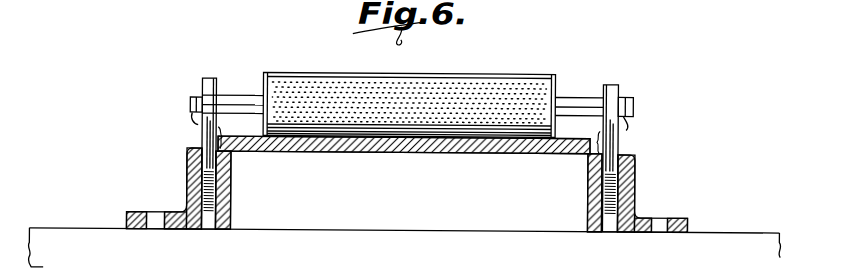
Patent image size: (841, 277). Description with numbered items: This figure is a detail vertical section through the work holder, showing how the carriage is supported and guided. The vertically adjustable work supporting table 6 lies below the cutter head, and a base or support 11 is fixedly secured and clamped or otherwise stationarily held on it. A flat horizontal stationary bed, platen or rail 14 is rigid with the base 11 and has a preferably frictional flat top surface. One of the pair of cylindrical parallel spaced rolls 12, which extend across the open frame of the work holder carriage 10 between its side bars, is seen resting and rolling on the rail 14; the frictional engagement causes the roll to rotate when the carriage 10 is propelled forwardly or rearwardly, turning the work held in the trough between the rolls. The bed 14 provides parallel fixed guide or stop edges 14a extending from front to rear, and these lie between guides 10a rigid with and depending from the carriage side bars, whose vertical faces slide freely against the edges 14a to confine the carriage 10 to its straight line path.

The work supporting table 6 is at (730, 244).
The work holder carriage 10 is at (215, 79).
The guides 10a is at (204, 154).
The base or support 11 is at (280, 206).
The rolls 12 is at (487, 84).
The bed, platen or rail 14 is at (566, 140).
The guide or stop edges 14a is at (598, 212).